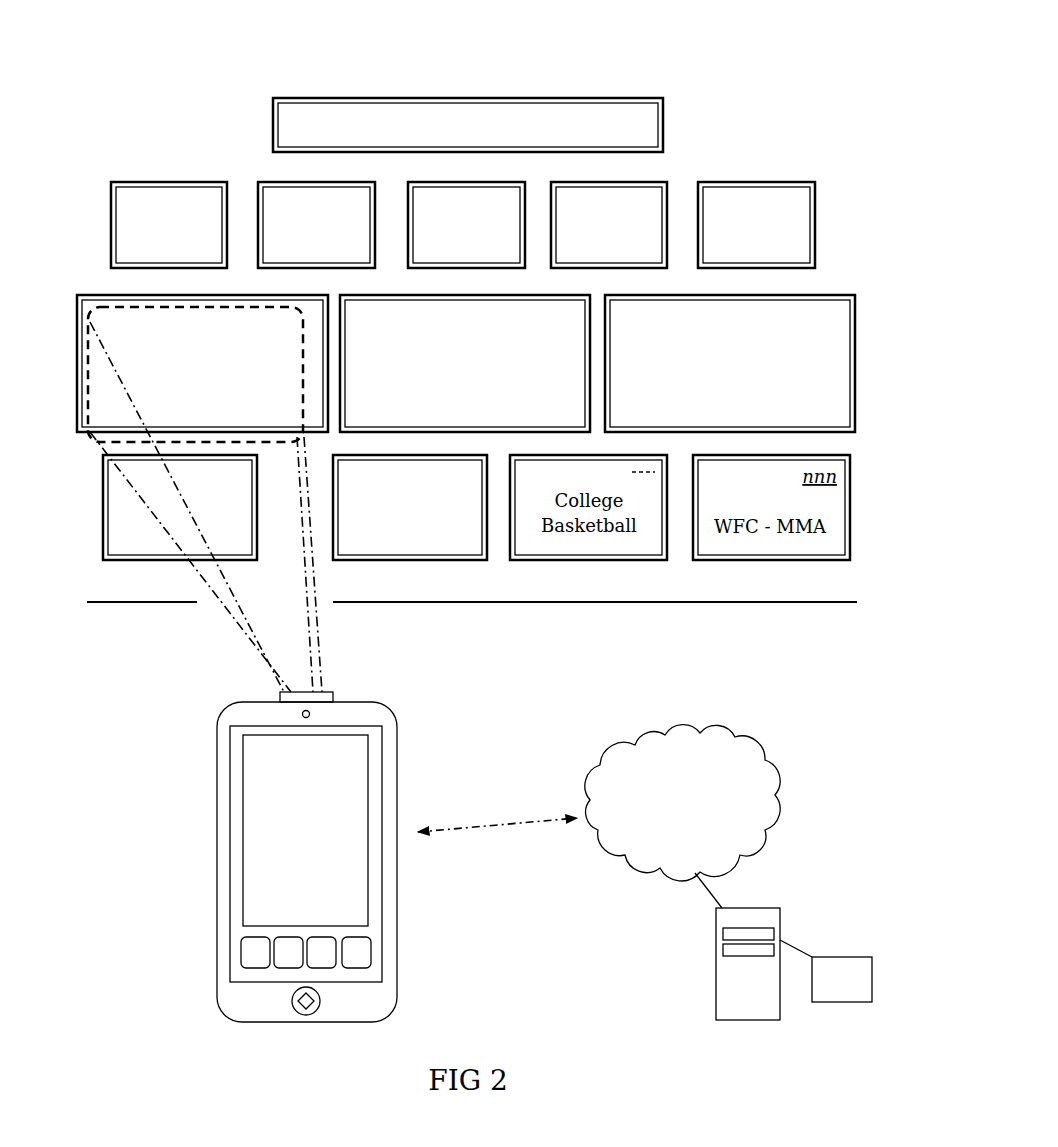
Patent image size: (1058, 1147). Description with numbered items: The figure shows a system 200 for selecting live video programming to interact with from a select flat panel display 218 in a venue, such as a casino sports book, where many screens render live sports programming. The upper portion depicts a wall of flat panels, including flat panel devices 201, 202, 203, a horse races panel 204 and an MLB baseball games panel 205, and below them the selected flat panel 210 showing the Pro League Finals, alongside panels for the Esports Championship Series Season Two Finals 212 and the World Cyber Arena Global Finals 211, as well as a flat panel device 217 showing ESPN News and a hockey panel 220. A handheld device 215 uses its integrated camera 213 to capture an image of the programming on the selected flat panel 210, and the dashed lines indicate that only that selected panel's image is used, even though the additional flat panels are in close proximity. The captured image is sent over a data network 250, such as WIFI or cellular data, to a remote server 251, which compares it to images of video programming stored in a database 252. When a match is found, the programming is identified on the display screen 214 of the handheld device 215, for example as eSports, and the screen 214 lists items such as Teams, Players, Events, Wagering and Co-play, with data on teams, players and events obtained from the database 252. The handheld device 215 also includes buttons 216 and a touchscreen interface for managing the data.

The system 200 is at (771, 92).
The flat panel device 201 is at (169, 225).
The flat panel device 202 is at (316, 225).
The wagering category tile 203 is at (466, 225).
The horse races 204 is at (609, 225).
The MLB baseball games 205 is at (756, 225).
The selected flat panel 210 is at (77, 419).
The World Cyber Arena Global Finals 211 is at (730, 363).
The Esports Championship Series Season 2 Finals 212 is at (465, 363).
The camera 213 is at (333, 694).
The display screen 214 is at (360, 815).
The handheld device 215 is at (217, 797).
The input buttons of mobile device 216 is at (245, 954).
The flat panel device 217 is at (180, 507).
The select flat panel display 218 is at (92, 308).
The Hockey category tile 220 is at (410, 507).
The data network 250 is at (682, 803).
The remote server 251 is at (780, 908).
The database 252 is at (863, 963).